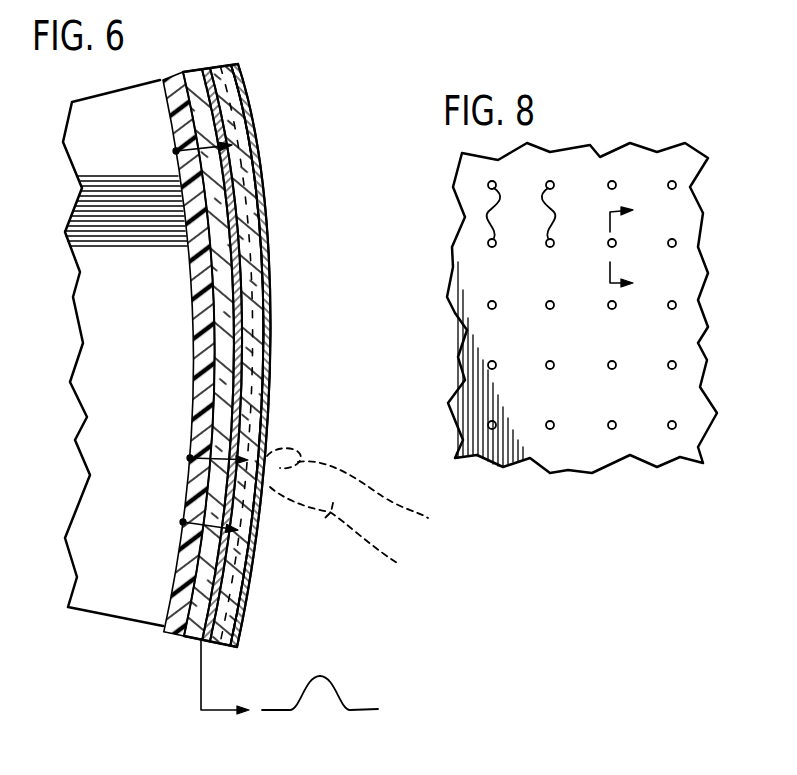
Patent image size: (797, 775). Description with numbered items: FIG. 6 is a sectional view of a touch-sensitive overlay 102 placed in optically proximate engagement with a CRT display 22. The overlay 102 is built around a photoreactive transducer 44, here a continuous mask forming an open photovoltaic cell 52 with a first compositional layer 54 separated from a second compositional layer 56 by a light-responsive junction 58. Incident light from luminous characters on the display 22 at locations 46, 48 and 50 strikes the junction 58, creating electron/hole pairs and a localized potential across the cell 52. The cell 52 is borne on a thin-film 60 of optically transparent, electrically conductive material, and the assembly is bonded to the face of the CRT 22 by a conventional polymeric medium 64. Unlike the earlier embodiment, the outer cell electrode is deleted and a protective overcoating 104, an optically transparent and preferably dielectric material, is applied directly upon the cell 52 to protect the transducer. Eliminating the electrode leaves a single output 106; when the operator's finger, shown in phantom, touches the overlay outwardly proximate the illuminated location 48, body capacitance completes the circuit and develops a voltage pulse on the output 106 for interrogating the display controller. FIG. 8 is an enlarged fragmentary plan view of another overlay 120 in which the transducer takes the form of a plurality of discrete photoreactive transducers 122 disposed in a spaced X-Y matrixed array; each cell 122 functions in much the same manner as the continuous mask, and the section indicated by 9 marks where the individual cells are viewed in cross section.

In FIG. 6, the CRT display 22 is at (110, 270).
In FIG. 6, the photoreactive transducer 44 is at (247, 342).
In FIG. 6, the illuminated location 46 is at (176, 151).
In FIG. 6, the illuminated location 48 is at (190, 458).
In FIG. 6, the illuminated location 50 is at (183, 522).
In FIG. 6, the open photovoltaic cell 52 is at (220, 652).
In FIG. 6, the first compositional layer 54 is at (248, 580).
In FIG. 6, the second compositional layer 56 is at (246, 562).
In FIG. 6, the junction 58 is at (240, 547).
In FIG. 6, the thin-film 60 is at (197, 638).
In FIG. 6, the polymeric medium 64 is at (174, 84).
In FIG. 6, the touch-sensitive overlay 102 is at (278, 198).
In FIG. 6, the protective overcoating 104 is at (272, 262).
In FIG. 6, the output 106 is at (199, 690).
In FIG. 8, the touch-sensitive overlay 120 is at (440, 354).
In FIG. 8, the discrete photoreactive transducers 122 is at (543, 210).
In FIG. 8, the section line 9- 9 is at (630, 248).